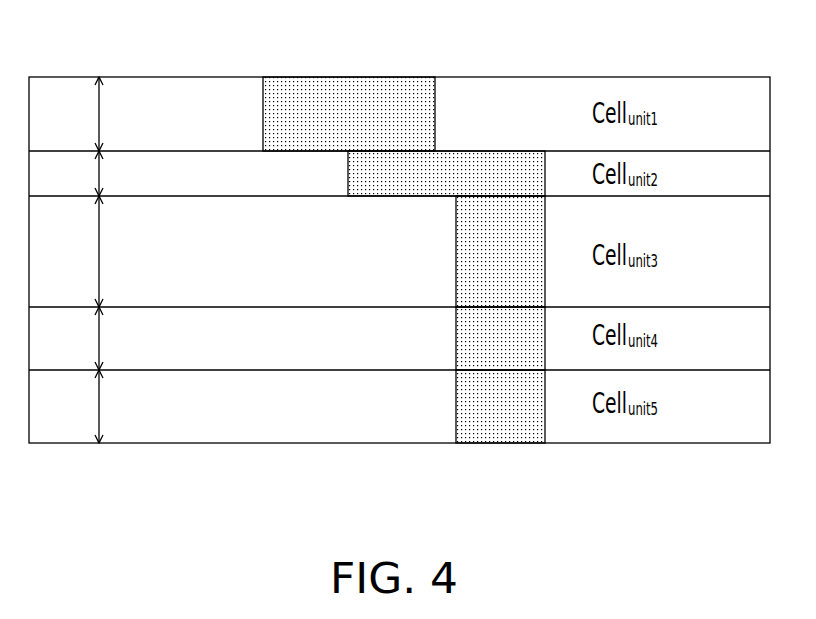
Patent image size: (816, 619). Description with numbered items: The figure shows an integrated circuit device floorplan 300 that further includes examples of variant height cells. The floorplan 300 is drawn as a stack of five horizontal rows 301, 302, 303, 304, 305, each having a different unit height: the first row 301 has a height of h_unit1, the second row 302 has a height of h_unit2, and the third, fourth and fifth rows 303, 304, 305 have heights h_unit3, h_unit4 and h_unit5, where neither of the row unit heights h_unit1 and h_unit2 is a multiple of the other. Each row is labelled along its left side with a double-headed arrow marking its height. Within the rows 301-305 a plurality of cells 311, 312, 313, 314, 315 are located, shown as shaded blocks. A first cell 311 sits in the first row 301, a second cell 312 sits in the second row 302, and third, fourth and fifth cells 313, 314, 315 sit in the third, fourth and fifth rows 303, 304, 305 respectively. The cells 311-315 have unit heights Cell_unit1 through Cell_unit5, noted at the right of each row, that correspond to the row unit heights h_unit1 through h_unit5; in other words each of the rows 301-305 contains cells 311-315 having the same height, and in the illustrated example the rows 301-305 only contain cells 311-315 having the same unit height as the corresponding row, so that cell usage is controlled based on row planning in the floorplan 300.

The integrated circuit device floorplan 300 is at (119, 62).
The first row 301 is at (77, 128).
The second row 302 is at (77, 189).
The third row 303 is at (77, 292).
The fourth row 304 is at (77, 354).
The fifth row 305 is at (77, 427).
The first cell 311 is at (387, 132).
The second cell 312 is at (500, 184).
The third cell 313 is at (523, 271).
The fourth cell 314 is at (523, 349).
The fifth cell 315 is at (523, 416).